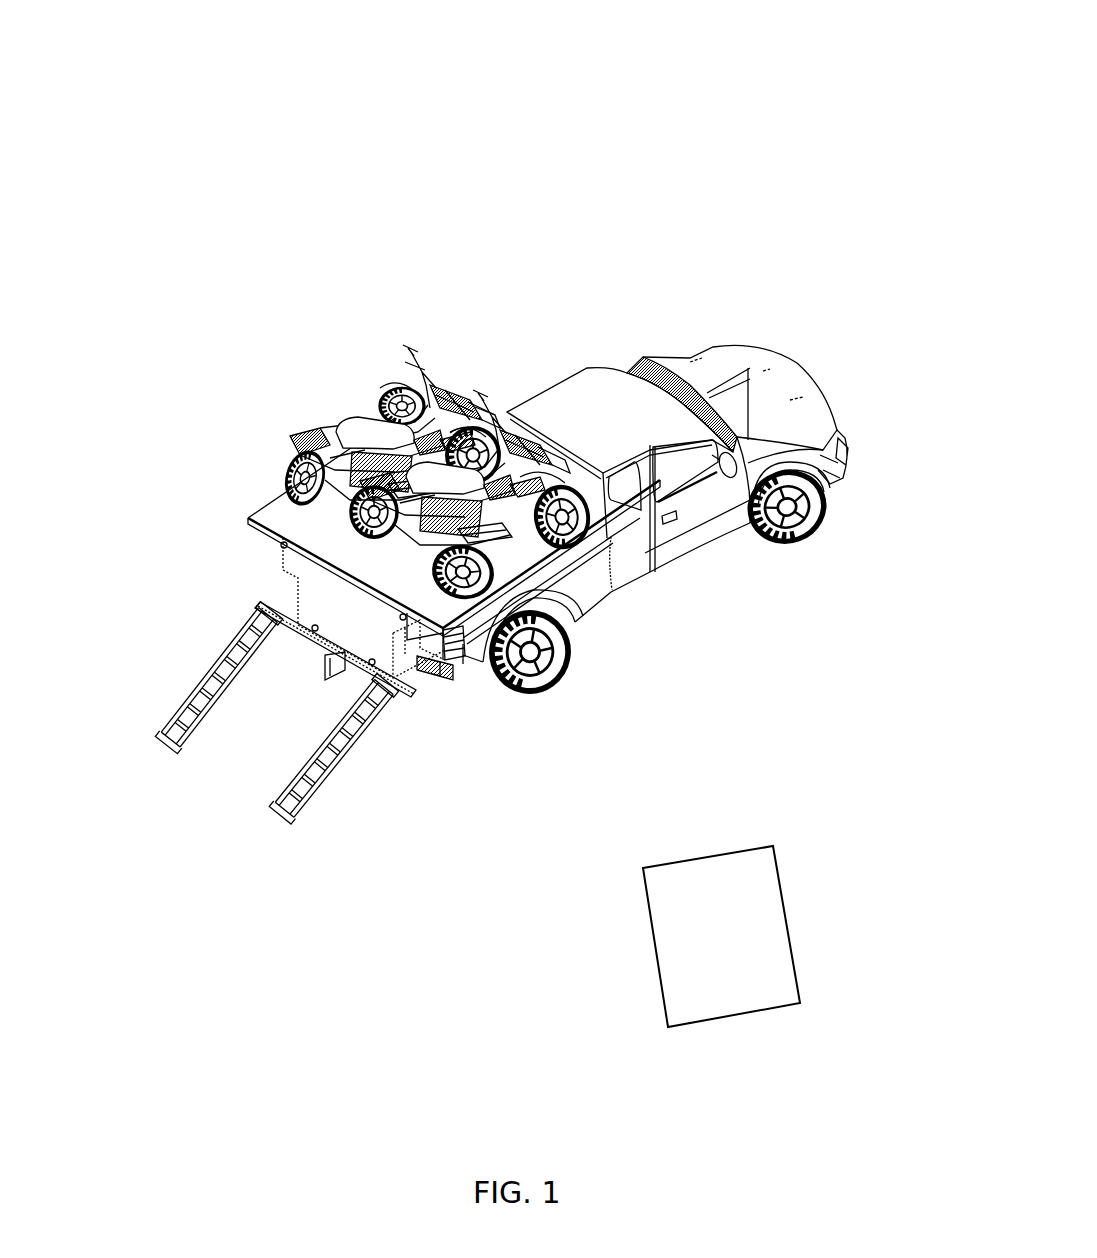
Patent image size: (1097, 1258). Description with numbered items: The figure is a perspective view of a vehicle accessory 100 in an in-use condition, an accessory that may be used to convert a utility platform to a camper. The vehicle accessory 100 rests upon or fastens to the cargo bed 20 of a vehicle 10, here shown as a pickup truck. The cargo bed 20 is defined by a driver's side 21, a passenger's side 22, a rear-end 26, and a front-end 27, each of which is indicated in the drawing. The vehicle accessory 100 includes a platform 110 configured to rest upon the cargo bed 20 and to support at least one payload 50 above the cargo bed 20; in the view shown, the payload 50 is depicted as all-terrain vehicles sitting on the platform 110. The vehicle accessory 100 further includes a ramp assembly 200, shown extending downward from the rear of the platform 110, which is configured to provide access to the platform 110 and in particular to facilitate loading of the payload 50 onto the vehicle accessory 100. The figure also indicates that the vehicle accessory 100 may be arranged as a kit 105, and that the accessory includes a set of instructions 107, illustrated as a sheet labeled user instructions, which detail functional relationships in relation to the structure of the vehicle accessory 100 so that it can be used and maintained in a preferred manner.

The vehicle accessory 100 is at (500, 515).
The kit 105 is at (500, 530).
The vehicle 10 is at (677, 413).
The cargo bed 20 is at (613, 563).
The driver's side 21 is at (266, 690).
The passenger's side 22 is at (633, 630).
The rear-end 26 is at (296, 712).
The front-end 27 is at (570, 399).
The payload 50 is at (375, 435).
The instructions 107 is at (657, 918).
The platform 110 is at (330, 578).
The ramp assembly 200 is at (337, 738).